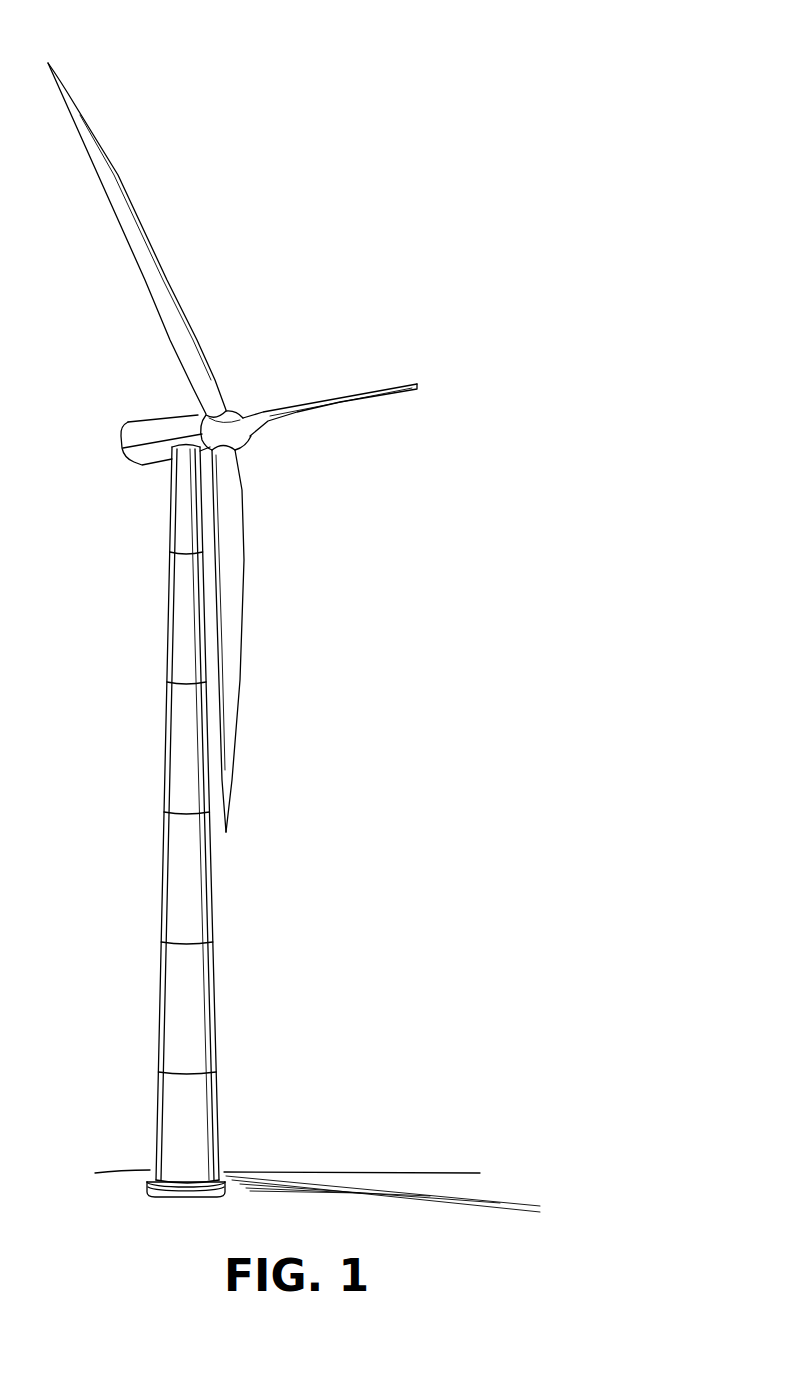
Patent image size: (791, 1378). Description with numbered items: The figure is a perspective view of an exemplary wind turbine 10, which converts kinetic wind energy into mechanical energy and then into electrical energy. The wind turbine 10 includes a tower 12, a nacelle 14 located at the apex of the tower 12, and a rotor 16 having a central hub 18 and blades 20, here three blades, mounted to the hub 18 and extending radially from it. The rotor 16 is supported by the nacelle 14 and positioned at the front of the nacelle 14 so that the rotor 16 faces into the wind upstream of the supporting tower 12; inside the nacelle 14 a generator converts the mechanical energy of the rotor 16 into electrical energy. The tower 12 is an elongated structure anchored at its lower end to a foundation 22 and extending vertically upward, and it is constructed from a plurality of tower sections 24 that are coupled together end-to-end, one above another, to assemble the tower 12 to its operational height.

The wind turbine 10 is at (402, 286).
The tower 12 is at (147, 796).
The nacelle 14 is at (123, 432).
The rotor 16 is at (247, 446).
The hub 18 is at (264, 414).
The blades 20 is at (127, 241).
The foundation 22 is at (175, 1198).
The tower sections 24 is at (170, 520).